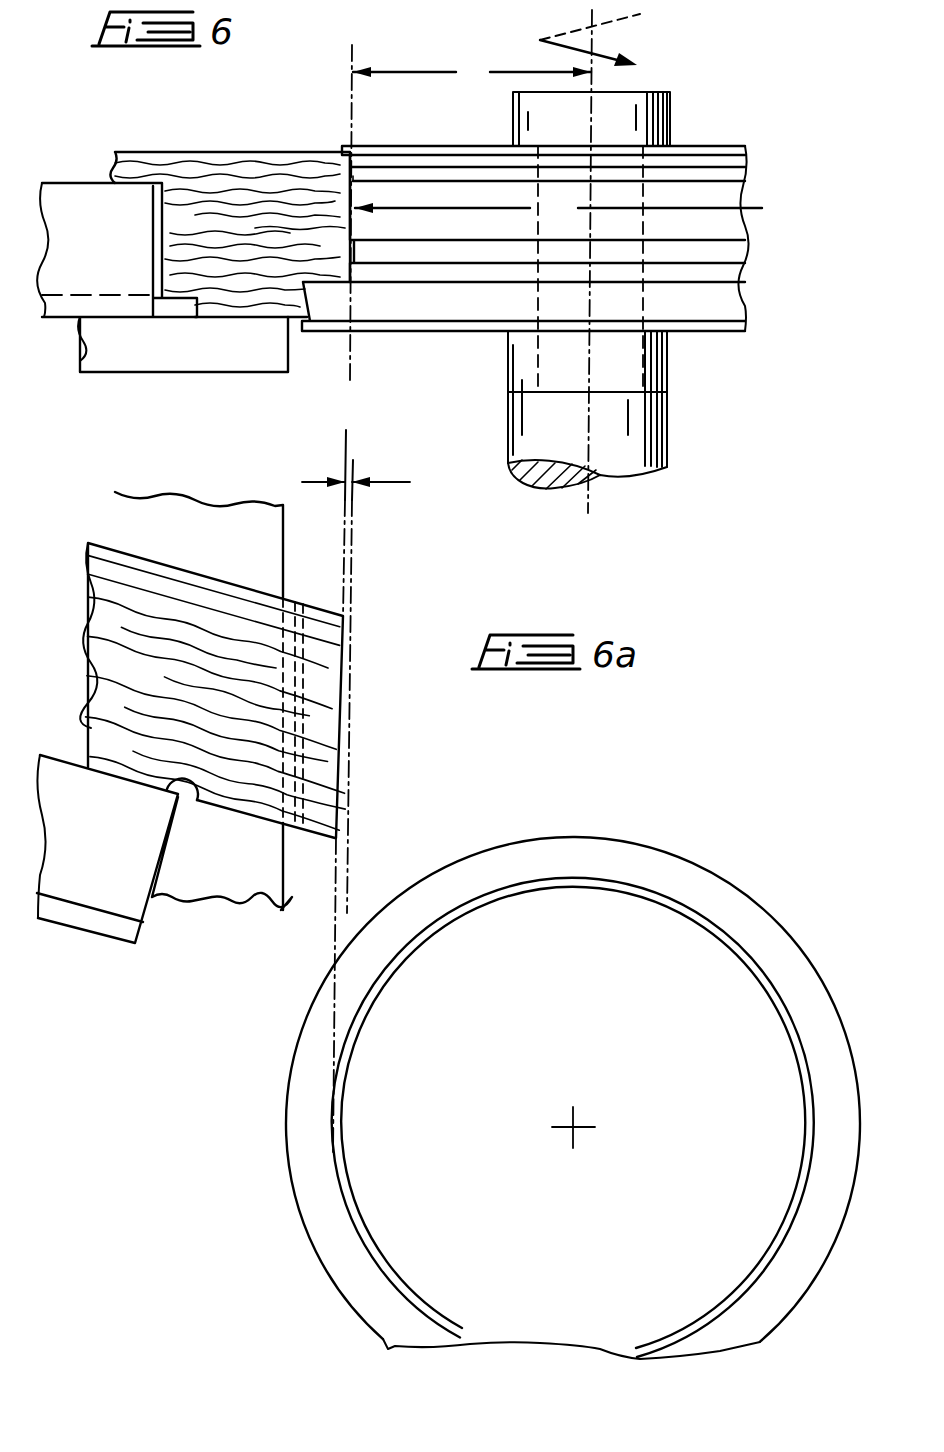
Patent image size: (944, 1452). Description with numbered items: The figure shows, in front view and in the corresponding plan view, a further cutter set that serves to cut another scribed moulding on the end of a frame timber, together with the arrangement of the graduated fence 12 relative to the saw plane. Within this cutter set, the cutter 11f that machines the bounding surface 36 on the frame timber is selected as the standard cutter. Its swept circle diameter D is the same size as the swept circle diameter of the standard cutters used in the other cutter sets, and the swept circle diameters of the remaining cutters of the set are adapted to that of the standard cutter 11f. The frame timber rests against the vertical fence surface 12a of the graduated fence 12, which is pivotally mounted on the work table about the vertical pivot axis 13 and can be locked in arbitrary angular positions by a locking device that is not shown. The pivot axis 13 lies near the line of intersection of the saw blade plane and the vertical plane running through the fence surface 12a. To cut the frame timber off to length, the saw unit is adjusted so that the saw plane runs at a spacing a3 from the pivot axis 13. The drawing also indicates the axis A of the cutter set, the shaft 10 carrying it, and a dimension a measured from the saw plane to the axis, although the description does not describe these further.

In FIG. 6, the shaft 10 is at (640, 453).
In FIG. 6, the cutter 11f is at (724, 231).
In FIG. 6, the graduated fence 12 is at (138, 278).
In FIG. 6, the vertical fence surface 12a is at (203, 802).
In FIG. 6, the pivot axis 13 is at (353, 96).
In FIG. 6, the bounding surface 36 is at (356, 198).
In FIG. 6, the axis of rotation A is at (589, 372).
In FIG. 6A, the axis of rotation A is at (578, 1124).
In FIG. 6, the swept circle diameter D is at (561, 212).
In FIG. 6, the distance a is at (472, 72).
In FIG. 6, the spacing a3 is at (352, 471).